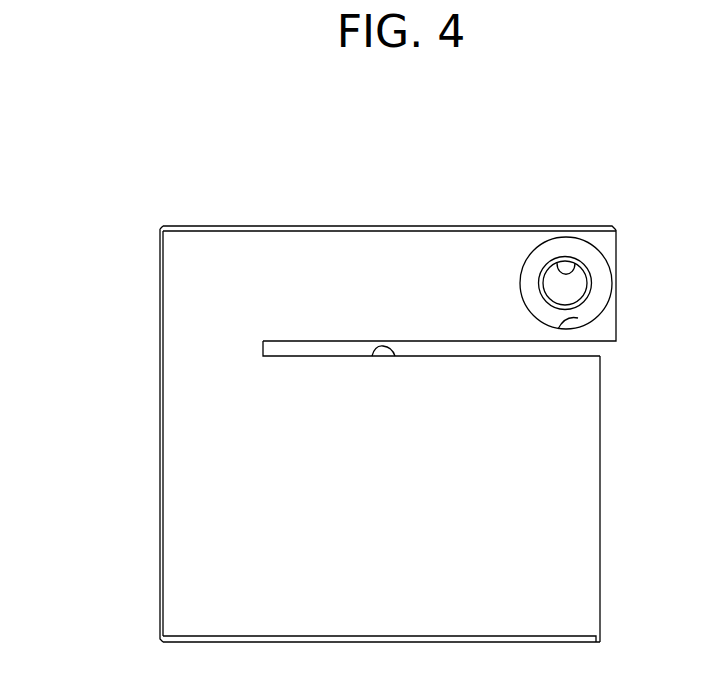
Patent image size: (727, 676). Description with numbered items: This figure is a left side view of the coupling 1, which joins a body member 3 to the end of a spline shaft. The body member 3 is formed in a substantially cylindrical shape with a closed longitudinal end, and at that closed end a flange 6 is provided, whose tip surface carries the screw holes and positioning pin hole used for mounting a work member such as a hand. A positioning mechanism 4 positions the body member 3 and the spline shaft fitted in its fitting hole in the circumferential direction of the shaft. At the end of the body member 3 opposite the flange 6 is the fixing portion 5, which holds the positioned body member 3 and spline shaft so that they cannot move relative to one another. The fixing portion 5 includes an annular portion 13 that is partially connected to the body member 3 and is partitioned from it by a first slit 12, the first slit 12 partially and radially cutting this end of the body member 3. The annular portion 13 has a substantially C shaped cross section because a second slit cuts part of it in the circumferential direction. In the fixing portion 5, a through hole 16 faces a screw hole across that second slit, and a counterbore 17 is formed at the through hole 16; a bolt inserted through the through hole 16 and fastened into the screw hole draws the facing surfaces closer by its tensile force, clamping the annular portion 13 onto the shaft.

The coupling 1 is at (96, 212).
The body member 3 is at (614, 493).
The positioning mechanism 4 is at (209, 220).
The fixing portion 5 is at (610, 289).
The flange 6 is at (600, 550).
The first slit 12 is at (372, 357).
The annular portion 13 is at (333, 226).
The through hole 16 is at (575, 265).
The counterbore 17 is at (578, 318).